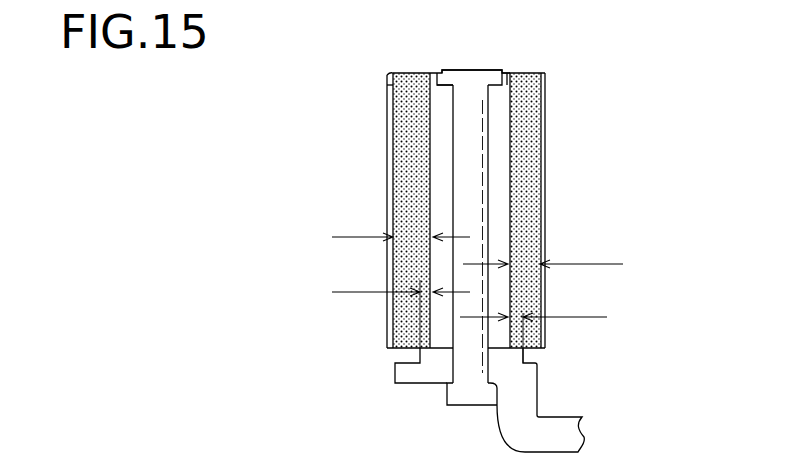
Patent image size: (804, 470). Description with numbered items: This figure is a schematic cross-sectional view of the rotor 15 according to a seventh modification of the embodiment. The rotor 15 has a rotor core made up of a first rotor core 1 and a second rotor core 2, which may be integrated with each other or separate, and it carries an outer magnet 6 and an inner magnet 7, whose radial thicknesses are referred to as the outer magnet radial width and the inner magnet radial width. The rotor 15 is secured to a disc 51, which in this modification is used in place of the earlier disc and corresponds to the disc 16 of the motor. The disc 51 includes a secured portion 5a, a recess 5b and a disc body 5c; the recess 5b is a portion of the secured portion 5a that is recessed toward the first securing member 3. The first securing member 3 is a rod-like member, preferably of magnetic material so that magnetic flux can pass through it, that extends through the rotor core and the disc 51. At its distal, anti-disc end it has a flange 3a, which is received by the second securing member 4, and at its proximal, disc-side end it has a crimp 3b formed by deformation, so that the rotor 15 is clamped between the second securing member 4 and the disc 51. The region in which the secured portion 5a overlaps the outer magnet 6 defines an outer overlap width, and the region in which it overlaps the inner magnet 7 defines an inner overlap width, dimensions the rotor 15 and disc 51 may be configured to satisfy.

The rotor 15 is at (328, 97).
The first rotor core 1 is at (542, 182).
The second rotor core 2 is at (543, 78).
The first securing member 3 is at (472, 172).
The flange 3a is at (468, 80).
The crimp 3b is at (505, 395).
The second securing member 4 is at (513, 68).
The secured portion 5a is at (428, 373).
The recess 5b is at (402, 352).
The disc body 5c is at (513, 417).
The outer magnet 6 is at (403, 136).
The inner magnet 7 is at (537, 220).
The disc 16 is at (383, 375).
The disc 51 is at (367, 469).